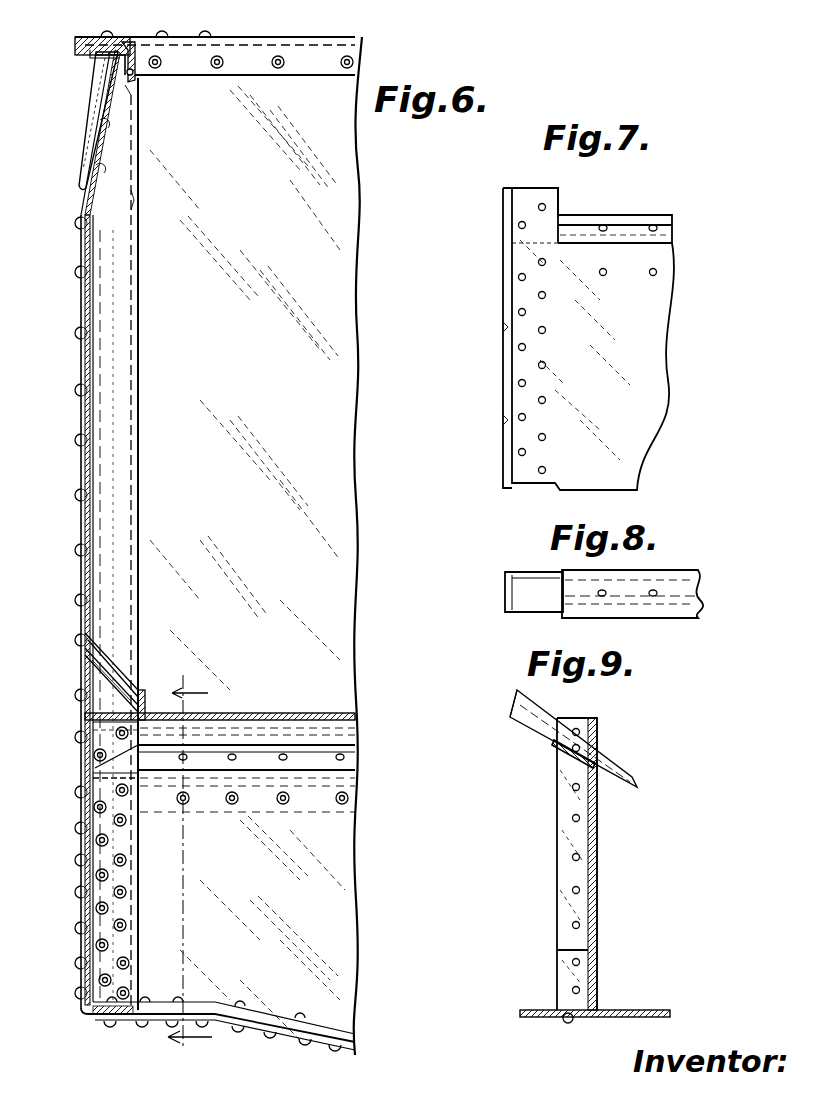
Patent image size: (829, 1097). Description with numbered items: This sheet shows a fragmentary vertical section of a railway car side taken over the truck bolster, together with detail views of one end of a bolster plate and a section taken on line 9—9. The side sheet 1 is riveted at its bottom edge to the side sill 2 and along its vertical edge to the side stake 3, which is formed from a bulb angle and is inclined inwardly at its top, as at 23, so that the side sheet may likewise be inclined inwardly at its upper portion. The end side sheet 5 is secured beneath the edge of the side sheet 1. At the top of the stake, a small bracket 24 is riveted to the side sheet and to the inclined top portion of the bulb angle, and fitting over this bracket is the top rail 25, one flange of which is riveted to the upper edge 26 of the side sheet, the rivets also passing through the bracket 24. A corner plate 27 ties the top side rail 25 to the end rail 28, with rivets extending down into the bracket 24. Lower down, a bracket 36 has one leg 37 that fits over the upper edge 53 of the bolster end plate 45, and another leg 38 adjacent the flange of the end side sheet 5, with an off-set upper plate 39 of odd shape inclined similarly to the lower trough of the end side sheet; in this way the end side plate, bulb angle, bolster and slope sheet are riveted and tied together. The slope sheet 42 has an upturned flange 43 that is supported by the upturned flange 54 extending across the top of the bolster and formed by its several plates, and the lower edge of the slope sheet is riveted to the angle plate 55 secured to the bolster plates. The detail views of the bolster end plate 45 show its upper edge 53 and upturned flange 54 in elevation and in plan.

In FIG. 6, the side sheet 1 is at (81, 546).
In FIG. 6, the side sill 2 is at (82, 1010).
In FIG. 6, the side stake 3 is at (118, 457).
In FIG. 6, the end side sheet 5 is at (86, 488).
In FIG. 6, the section line 9— 9 is at (190, 870).
In FIG. 6, the inclined top portion of bulb angle 23 is at (118, 166).
In FIG. 6, the bracket 24 is at (102, 113).
In FIG. 6, the top rail 25 is at (88, 46).
In FIG. 6, the upper edge of side sheet 26 is at (122, 74).
In FIG. 6, the corner plate 27 is at (95, 44).
In FIG. 6, the end rail 28 is at (258, 48).
In FIG. 6, the bracket 36 is at (92, 728).
In FIG. 6, the leg of bracket 37 is at (100, 742).
In FIG. 6, the leg of bracket 38 is at (138, 746).
In FIG. 6, the off-set upper plate 39 is at (92, 687).
In FIG. 6, the slope sheet 42 is at (288, 725).
In FIG. 9, the slope sheet 42 is at (615, 772).
In FIG. 6, the flange of slope sheet 43 is at (157, 694).
In FIG. 6, the end plate of bolster 45 is at (345, 878).
In FIG. 7, the end plate of bolster 45 is at (640, 340).
In FIG. 8, the end plate of bolster 45 is at (680, 572).
In FIG. 9, the end plate of bolster 45 is at (593, 880).
In FIG. 7, the upper edge of bolster 53 is at (540, 220).
In FIG. 8, the upper edge of bolster 53 is at (530, 572).
In FIG. 9, the upper edge of bolster 53 is at (592, 740).
In FIG. 6, the upturned flange of bolster plate 54 is at (257, 753).
In FIG. 7, the upturned flange of bolster plate 54 is at (658, 228).
In FIG. 8, the upturned flange of bolster plate 54 is at (672, 602).
In FIG. 9, the upturned flange of bolster plate 54 is at (557, 750).
In FIG. 6, the angle plate 55 is at (304, 816).